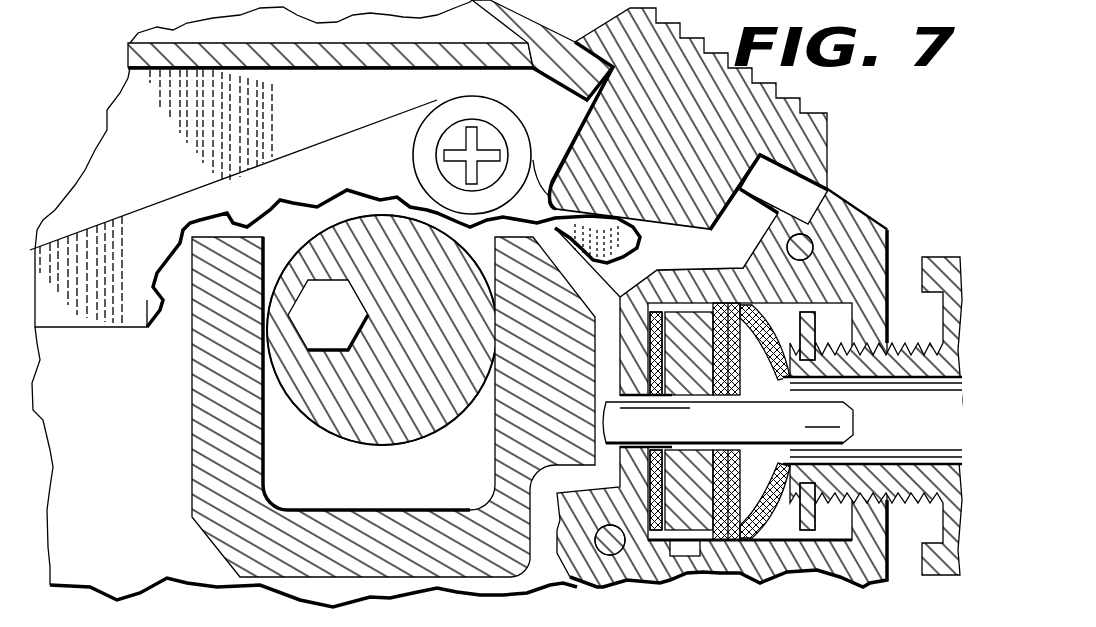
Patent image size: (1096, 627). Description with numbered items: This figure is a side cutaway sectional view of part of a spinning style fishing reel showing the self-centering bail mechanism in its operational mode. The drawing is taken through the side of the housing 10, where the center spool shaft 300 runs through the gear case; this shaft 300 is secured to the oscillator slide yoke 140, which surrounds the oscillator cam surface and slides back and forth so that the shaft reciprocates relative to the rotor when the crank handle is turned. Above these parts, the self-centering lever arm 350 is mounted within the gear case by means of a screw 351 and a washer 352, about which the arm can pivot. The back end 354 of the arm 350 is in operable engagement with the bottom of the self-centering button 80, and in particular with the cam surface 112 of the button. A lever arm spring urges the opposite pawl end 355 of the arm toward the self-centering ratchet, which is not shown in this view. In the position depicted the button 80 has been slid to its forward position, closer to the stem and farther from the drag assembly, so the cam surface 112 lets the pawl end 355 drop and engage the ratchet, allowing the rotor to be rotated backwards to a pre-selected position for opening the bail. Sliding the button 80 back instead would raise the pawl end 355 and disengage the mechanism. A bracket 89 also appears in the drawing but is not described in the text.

The housing 10 is at (132, 72).
The self-centering button 80 is at (788, 112).
The bracket 89 is at (726, 214).
The cam surface 112 is at (690, 230).
The oscillator slide yoke 140 is at (217, 528).
The center spool shaft 300 is at (752, 431).
The self-centering lever arm 350 is at (403, 135).
The screw 351 is at (499, 135).
The washer 352 is at (483, 98).
The back end 354 is at (637, 243).
The pawl end 355 is at (68, 327).